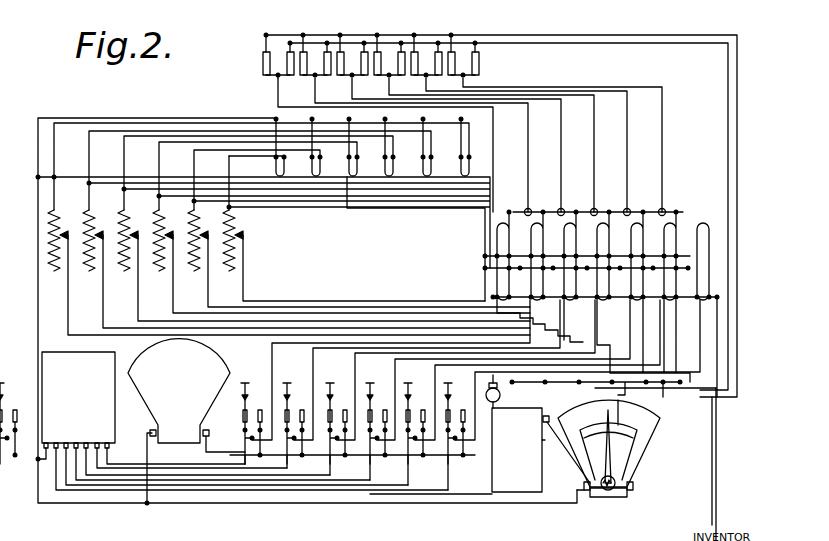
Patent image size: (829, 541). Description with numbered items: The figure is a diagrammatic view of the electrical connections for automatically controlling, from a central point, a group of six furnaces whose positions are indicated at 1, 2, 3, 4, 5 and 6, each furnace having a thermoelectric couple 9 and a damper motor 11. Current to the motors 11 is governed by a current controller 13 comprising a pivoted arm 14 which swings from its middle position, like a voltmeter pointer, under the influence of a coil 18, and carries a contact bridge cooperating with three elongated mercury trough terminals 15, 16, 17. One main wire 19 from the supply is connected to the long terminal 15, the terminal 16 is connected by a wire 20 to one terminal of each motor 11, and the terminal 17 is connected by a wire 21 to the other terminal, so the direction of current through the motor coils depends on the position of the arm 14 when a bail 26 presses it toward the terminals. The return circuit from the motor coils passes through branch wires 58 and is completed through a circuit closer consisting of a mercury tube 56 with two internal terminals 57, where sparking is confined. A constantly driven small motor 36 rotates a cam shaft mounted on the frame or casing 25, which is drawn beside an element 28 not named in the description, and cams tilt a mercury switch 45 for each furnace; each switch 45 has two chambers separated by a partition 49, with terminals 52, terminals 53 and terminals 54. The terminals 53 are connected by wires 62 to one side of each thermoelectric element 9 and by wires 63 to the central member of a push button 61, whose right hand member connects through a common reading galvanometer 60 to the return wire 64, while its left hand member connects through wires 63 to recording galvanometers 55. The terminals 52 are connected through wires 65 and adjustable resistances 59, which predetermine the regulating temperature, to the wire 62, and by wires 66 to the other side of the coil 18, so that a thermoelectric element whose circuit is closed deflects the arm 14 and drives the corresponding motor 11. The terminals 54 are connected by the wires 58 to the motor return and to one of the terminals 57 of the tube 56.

The furnace position 1 is at (278, 46).
The furnace position 2 is at (315, 46).
The furnace position 3 is at (352, 46).
The furnace position 4 is at (389, 46).
The furnace position 5 is at (426, 46).
The furnace position 6 is at (463, 46).
The motor 11 is at (263, 72).
The wire 20 is at (570, 36).
The wire 21 is at (594, 50).
The branch wires 58 is at (278, 102).
The return wire 64 is at (240, 103).
The wires 62 is at (270, 165).
The thermoelectric couple 9 is at (284, 166).
The adjustable resistances 59 is at (58, 280).
The wires 65 is at (272, 310).
The terminals 54 is at (497, 254).
The partition 49 is at (482, 256).
The mercury switch 45 is at (485, 276).
The terminals 53 is at (485, 268).
The terminals 52 is at (494, 294).
The tube 56 is at (707, 226).
The internal terminals 57 is at (706, 304).
The wires 66 is at (605, 355).
The wires 63 is at (272, 343).
The push button 61 is at (245, 430).
The recording galvanometers 55 is at (109, 366).
The reading galvanometer 60 is at (188, 369).
The small motor 36 is at (500, 394).
The frame or casing 25 is at (492, 492).
The coil 28 is at (542, 440).
The terminal 17 is at (575, 450).
The current controller 13 is at (644, 452).
The terminal 15 is at (646, 416).
The terminal 16 is at (617, 427).
The pivoted arm 14 is at (626, 478).
The coil 18 is at (608, 500).
The bail 26 is at (579, 485).
The main wire 19 is at (590, 396).